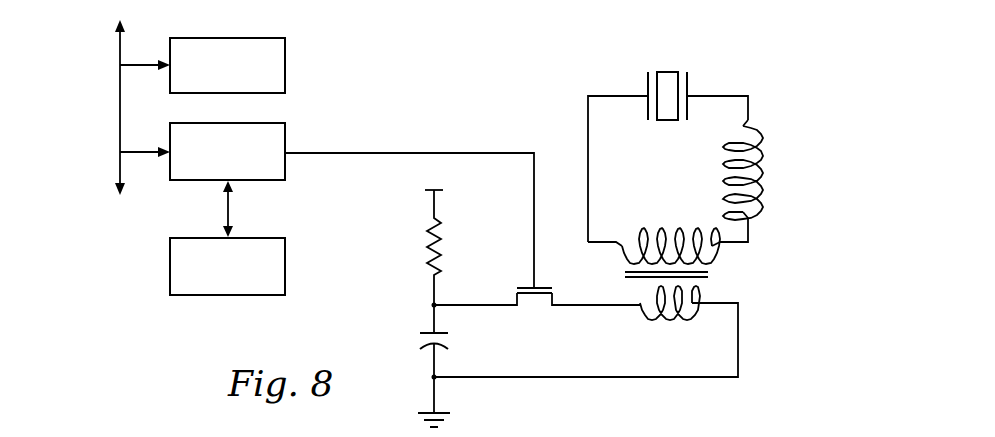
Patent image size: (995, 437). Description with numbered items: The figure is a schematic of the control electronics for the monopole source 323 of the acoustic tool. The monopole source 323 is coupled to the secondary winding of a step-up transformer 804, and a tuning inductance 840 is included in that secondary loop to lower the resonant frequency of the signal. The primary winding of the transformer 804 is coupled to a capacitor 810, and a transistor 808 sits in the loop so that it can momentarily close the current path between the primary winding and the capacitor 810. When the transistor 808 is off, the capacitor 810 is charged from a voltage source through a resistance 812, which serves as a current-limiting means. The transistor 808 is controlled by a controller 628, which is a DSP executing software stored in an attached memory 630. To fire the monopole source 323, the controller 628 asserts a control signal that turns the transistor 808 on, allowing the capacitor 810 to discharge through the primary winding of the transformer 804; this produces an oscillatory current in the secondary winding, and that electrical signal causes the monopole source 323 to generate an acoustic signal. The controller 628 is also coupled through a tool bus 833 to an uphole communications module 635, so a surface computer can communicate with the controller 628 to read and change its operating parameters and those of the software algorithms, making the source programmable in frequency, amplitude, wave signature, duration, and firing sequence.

The tool bus 833 is at (118, 109).
The uphole communications module 635 is at (286, 66).
The controller 628 is at (286, 132).
The memory 630 is at (286, 266).
The resistance 812 is at (443, 238).
The transistor 808 is at (529, 287).
The capacitor 810 is at (423, 332).
The monopole source 323 is at (668, 71).
The tuning inductance 840 is at (765, 168).
The step-up transformer 804 is at (710, 275).